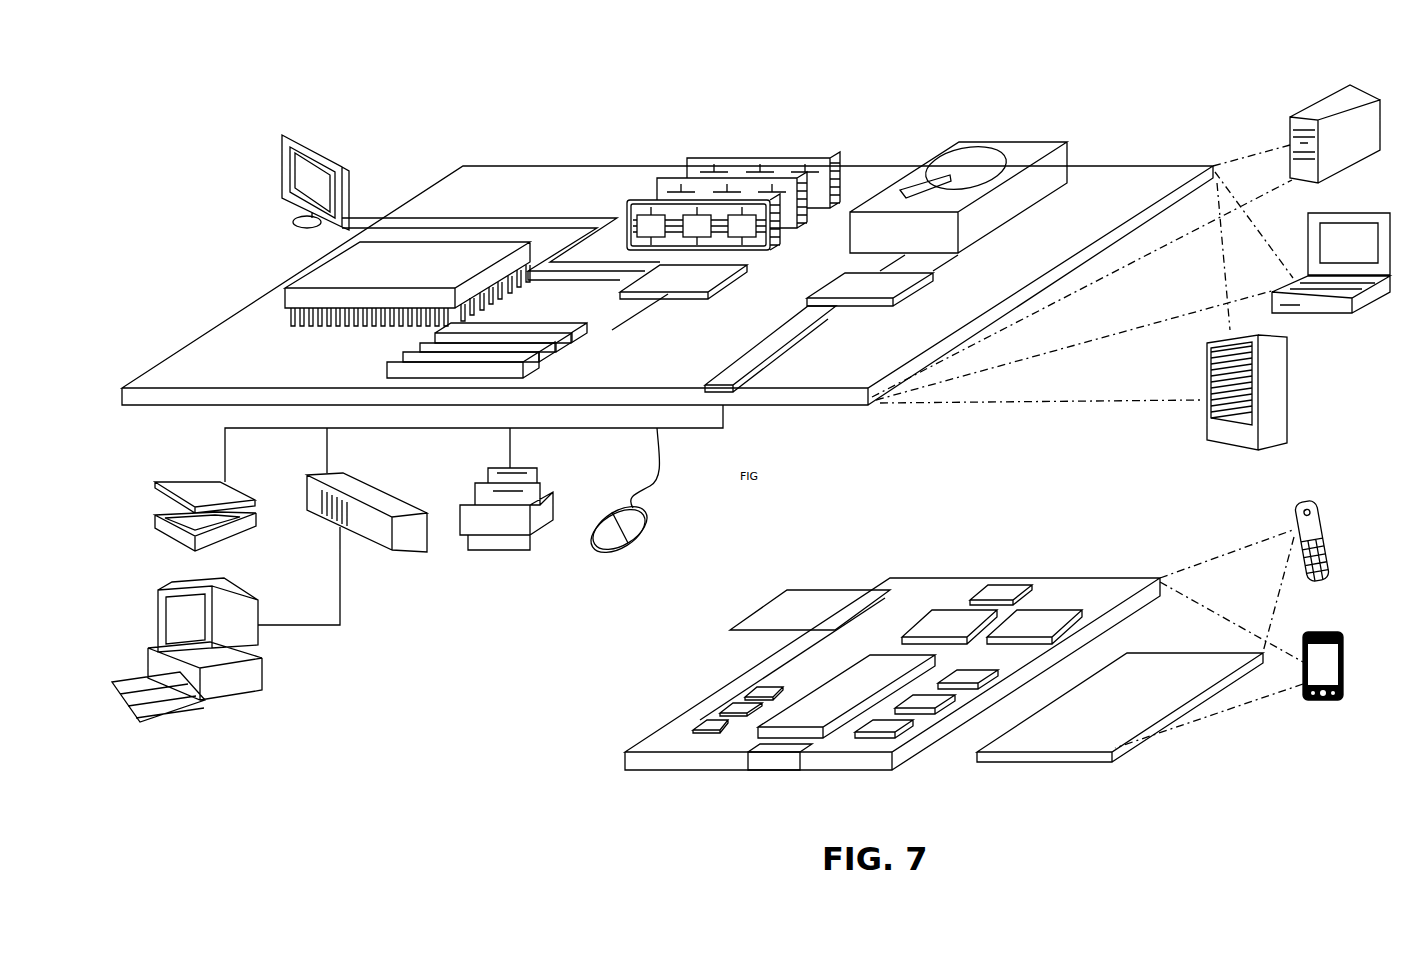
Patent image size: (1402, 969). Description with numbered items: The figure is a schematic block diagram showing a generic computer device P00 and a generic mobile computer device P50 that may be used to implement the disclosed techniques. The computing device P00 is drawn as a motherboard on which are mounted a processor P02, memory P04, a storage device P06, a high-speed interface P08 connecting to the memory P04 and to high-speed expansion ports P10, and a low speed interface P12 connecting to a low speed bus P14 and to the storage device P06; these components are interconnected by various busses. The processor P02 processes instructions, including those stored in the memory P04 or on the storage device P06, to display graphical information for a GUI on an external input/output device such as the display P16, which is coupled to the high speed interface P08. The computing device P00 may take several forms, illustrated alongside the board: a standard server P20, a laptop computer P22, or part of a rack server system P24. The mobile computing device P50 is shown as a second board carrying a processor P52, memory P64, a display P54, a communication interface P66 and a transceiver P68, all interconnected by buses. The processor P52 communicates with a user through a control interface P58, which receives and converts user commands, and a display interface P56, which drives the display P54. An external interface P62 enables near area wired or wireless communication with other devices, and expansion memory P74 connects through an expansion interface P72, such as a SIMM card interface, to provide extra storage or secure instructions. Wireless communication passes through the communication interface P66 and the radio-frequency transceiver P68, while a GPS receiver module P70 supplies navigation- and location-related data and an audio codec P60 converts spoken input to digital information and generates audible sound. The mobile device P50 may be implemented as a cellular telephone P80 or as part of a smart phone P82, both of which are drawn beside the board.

The computing device P00 is at (404, 118).
The processor P02 is at (310, 270).
The memory P04 is at (772, 170).
The storage device P06 is at (1002, 144).
The high-speed interface P08 is at (697, 274).
The high-speed expansion ports P10 is at (412, 350).
The low speed interface P12 is at (850, 280).
The low speed bus P14 is at (728, 374).
The display P16 is at (292, 137).
The standard server P20 is at (1312, 110).
The laptop computer P22 is at (1368, 212).
The rack server system P24 is at (1290, 393).
The mobile computer device P50 is at (1175, 768).
The processor P52 is at (823, 700).
The display P54 is at (1160, 668).
The display interface P56 is at (908, 735).
The control interface P58 is at (950, 702).
The audio codec P60 is at (978, 672).
The external interface P62 is at (773, 757).
The memory P64 is at (735, 700).
The communication interface P66 is at (948, 608).
The transceiver P68 is at (1042, 610).
The GPS receiver module P70 is at (1002, 588).
The expansion interface P72 is at (872, 590).
The expansion memory P74 is at (788, 590).
The cellular telephone P80 is at (1303, 504).
The smart phone P82 is at (1316, 636).